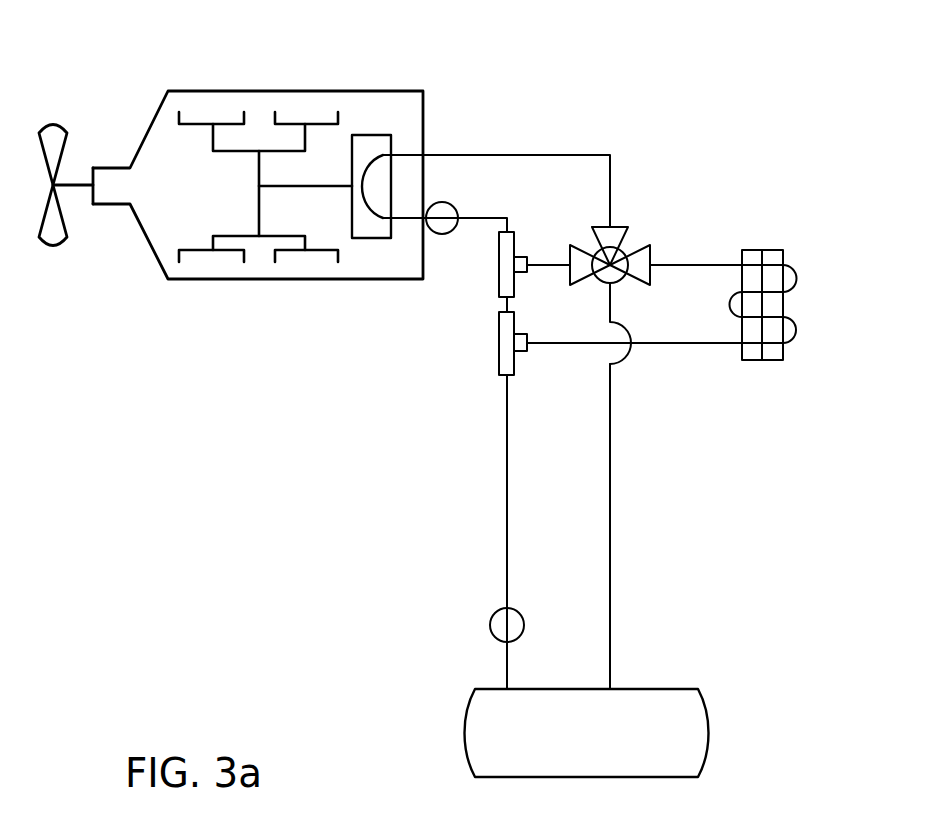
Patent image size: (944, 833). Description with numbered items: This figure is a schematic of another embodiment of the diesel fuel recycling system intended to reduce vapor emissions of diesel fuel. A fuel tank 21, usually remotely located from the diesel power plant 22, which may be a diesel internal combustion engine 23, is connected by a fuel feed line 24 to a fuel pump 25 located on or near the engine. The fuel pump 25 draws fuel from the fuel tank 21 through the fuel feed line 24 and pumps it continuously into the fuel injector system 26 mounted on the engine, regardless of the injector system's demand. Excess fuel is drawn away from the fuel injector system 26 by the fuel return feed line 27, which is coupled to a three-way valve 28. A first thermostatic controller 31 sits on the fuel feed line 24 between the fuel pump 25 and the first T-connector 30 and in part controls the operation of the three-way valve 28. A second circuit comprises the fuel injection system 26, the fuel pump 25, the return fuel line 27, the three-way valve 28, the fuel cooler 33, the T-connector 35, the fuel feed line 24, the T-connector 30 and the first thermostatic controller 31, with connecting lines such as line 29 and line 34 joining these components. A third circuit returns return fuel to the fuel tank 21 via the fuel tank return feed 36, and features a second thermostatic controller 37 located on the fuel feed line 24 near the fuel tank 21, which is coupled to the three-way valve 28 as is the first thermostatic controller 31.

The fuel tank 21 is at (708, 732).
The diesel power plant 22 is at (245, 73).
The diesel internal combustion engine 23 is at (367, 265).
The fuel feed line 24 is at (506, 299).
The fuel pump 25 is at (372, 148).
The fuel injector system 26 is at (242, 237).
The fuel return feed line 27 is at (460, 153).
The three-way valve 28 is at (630, 250).
The fuel line 29 is at (540, 265).
The first T-connector 30 is at (500, 279).
The first thermostatic controller 31 is at (442, 235).
The fuel cooler 33 is at (770, 335).
The cooler return line 34 is at (557, 345).
The T-connector 35 is at (498, 357).
The fuel tank return feed 36 is at (611, 592).
The second thermostatic controller 37 is at (490, 627).